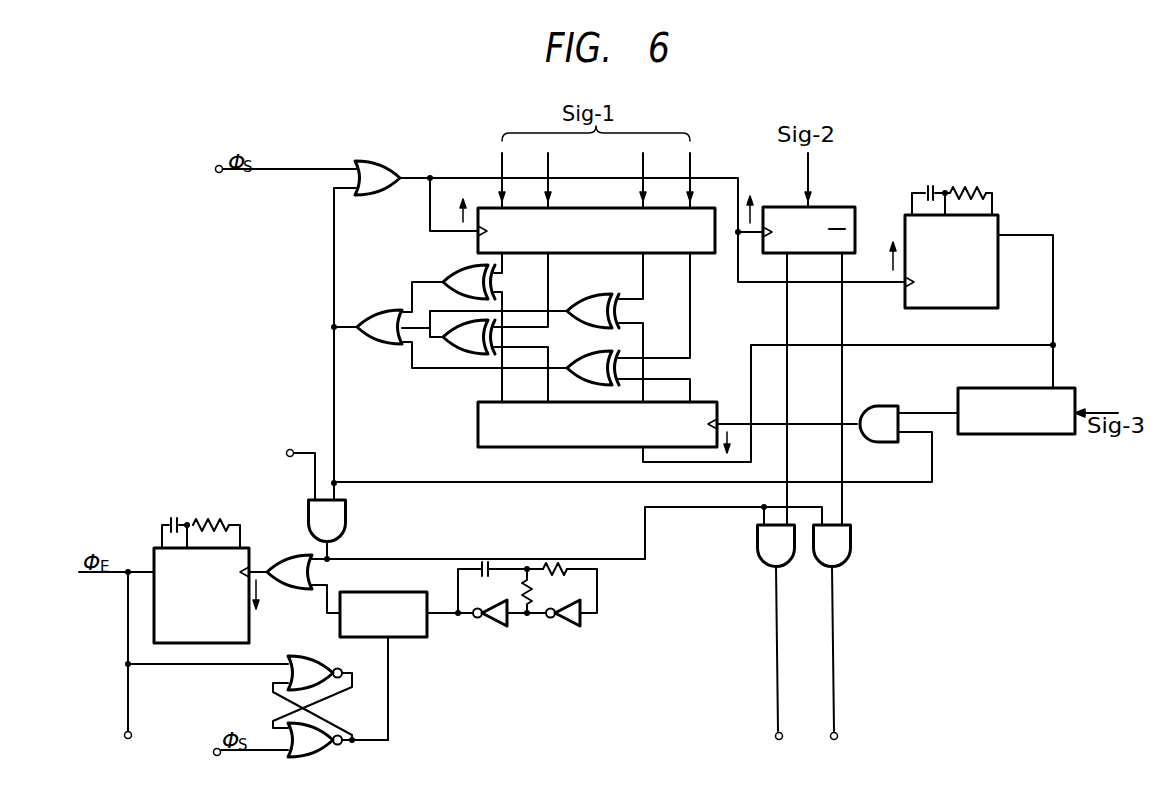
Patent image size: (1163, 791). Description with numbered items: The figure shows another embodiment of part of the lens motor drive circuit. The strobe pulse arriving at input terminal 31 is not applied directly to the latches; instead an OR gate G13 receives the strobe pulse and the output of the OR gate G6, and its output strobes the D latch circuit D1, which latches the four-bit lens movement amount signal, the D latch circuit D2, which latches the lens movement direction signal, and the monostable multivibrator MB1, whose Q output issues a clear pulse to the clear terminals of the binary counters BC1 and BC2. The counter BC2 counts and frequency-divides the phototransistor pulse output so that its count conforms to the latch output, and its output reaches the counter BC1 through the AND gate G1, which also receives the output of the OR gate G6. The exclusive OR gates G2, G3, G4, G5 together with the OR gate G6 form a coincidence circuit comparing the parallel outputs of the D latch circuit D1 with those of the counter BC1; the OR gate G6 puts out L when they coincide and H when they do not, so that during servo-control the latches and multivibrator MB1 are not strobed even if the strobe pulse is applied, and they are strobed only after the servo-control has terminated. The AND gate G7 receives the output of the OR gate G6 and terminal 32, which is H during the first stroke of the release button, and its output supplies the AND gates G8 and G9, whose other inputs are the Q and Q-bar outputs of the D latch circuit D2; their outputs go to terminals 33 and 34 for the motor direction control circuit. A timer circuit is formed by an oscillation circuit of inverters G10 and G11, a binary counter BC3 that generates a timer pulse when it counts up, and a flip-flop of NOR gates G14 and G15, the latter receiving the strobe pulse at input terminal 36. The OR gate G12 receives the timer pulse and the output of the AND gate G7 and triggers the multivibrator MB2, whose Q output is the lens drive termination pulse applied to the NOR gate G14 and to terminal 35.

The AND gate G1 is at (878, 406).
The exclusive OR gate G2 is at (452, 269).
The exclusive OR gate G3 is at (453, 349).
The exclusive OR gate G4 is at (590, 294).
The exclusive OR gate G5 is at (581, 353).
The OR gate G6 is at (380, 309).
The AND gate G7 is at (348, 512).
The AND gate G8 is at (761, 568).
The AND gate G9 is at (853, 568).
The inverter G10 is at (495, 630).
The inverter G11 is at (570, 630).
The OR gate G12 is at (296, 590).
The OR gate G13 is at (375, 161).
The NOR gate G14 is at (303, 656).
The NOR gate G15 is at (310, 758).
The D latch circuit D1 is at (712, 208).
The D latch circuit D2 is at (840, 207).
The monostable multivibrator MB1 is at (950, 308).
The multivibrator MB2 is at (250, 548).
The binary counter BC1 is at (541, 448).
The binary counter BC2 is at (1016, 435).
The binary counter BC3 is at (375, 593).
The input terminal 31 is at (248, 170).
The terminal 32 is at (278, 454).
The terminal 33 is at (835, 749).
The terminal 34 is at (781, 749).
The terminal 35 is at (130, 747).
The input terminal 36 is at (204, 749).